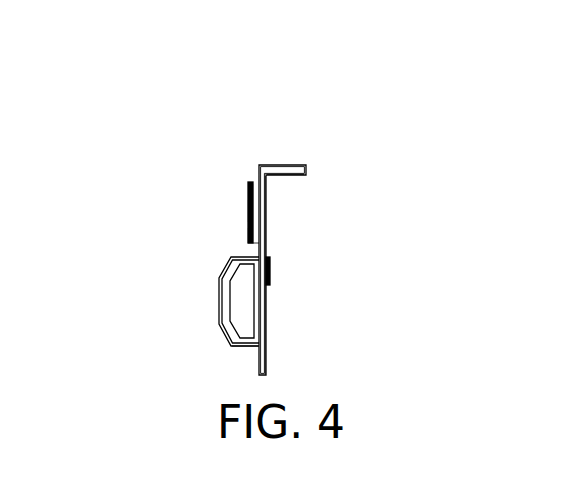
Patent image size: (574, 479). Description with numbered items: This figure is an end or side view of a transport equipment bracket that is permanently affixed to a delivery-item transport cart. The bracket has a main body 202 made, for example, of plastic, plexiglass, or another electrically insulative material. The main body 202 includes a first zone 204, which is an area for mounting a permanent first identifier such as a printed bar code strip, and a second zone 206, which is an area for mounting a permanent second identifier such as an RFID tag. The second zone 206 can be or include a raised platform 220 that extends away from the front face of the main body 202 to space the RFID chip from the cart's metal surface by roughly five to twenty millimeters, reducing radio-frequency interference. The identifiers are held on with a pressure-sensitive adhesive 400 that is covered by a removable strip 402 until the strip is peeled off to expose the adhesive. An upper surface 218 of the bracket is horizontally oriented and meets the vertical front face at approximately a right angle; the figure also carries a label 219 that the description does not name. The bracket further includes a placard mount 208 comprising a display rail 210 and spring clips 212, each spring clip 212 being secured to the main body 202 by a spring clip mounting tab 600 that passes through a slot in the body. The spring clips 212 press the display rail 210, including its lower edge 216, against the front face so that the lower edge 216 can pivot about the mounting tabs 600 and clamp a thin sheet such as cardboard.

The main body 202 is at (258, 180).
The first zone 204 is at (250, 183).
The second zone 206 is at (252, 216).
The placard mount 208 is at (212, 316).
The display rail 210 is at (221, 295).
The spring clip 212 is at (231, 265).
The lower edge 216 is at (243, 351).
The upper surface 218 is at (280, 159).
The flange 219 is at (300, 165).
The raised platform 220 is at (257, 241).
The pressure-sensitive adhesive 400 is at (248, 236).
The removable strip 402 is at (249, 220).
The spring clip mounting tab 600 is at (270, 272).